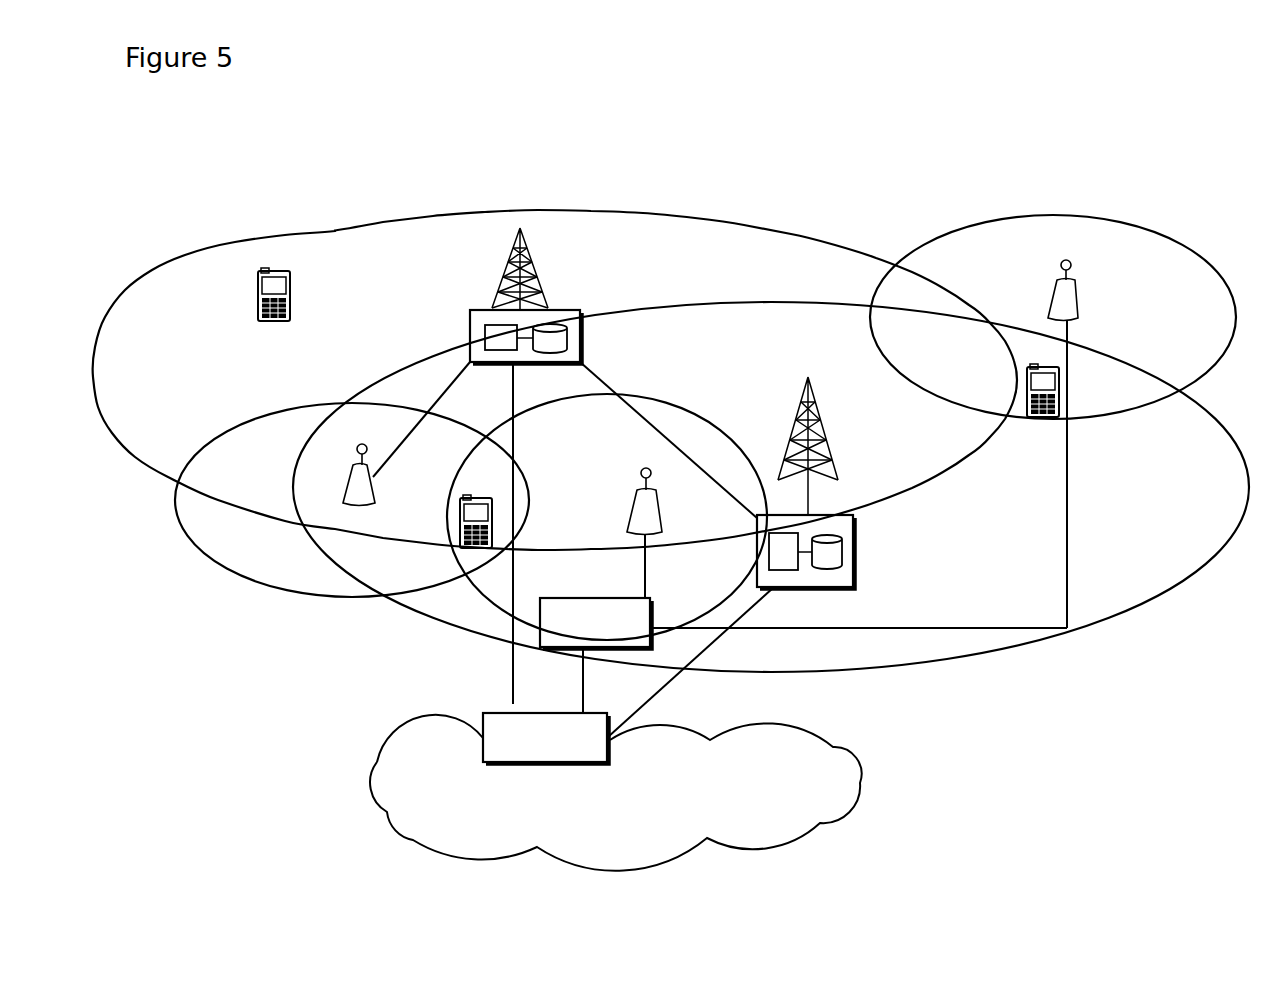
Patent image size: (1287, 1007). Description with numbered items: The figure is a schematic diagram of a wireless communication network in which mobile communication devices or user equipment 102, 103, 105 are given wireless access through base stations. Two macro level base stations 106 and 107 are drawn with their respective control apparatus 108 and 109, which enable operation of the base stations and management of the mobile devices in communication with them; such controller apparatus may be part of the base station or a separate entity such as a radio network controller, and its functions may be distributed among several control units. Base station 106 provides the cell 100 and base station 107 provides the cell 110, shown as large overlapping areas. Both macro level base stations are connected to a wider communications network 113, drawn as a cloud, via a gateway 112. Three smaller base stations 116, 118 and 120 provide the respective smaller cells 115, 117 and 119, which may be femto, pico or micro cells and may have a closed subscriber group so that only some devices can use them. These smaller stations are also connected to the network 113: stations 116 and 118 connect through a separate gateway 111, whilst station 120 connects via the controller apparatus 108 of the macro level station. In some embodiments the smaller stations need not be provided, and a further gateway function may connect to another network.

The cell 100 is at (188, 257).
The mobile communication device 102 is at (258, 310).
The mobile communication device 103 is at (460, 525).
The mobile communication device 105 is at (1043, 417).
The macro level base station 106 is at (503, 283).
The macro level base station 107 is at (830, 447).
The control apparatus 108 is at (470, 325).
The control apparatus 109 is at (845, 575).
The cell 110 is at (1130, 618).
The gateway 111 is at (547, 628).
The gateway 112 is at (487, 713).
The communications network 113 is at (408, 770).
The cell 115 is at (1205, 242).
The smaller base station 116 is at (1053, 293).
The cell 117 is at (677, 403).
The smaller base station 118 is at (645, 517).
The cell 119 is at (262, 578).
The smaller base station 120 is at (350, 480).